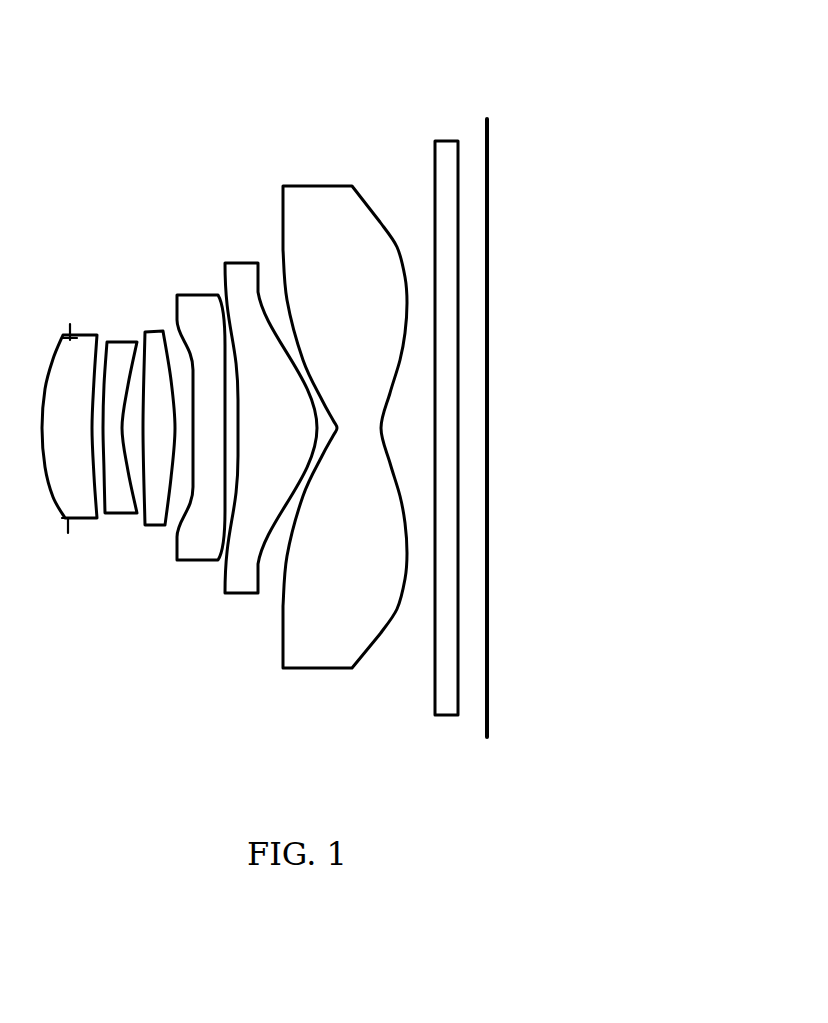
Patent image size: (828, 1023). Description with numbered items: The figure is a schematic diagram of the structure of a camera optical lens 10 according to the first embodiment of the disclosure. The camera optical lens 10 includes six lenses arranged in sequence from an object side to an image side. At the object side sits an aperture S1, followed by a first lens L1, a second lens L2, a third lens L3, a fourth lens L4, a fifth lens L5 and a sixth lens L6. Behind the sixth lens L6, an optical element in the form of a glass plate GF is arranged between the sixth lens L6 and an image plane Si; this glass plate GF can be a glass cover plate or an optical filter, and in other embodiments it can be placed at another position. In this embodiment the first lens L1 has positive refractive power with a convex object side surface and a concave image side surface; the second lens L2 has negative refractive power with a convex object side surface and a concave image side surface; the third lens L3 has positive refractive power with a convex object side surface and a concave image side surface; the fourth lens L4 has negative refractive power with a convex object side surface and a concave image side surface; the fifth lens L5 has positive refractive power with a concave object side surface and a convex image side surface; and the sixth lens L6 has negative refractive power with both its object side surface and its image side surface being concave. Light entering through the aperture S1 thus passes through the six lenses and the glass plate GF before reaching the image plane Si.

The camera optical lens 10 is at (291, 33).
The aperture S1 is at (60, 428).
The first lens L1 is at (72, 412).
The second lens L2 is at (121, 414).
The third lens L3 is at (159, 413).
The fourth lens L4 is at (201, 414).
The fifth lens L5 is at (271, 413).
The sixth lens L6 is at (345, 412).
The glass plate GF is at (447, 414).
The image plane Si is at (494, 410).